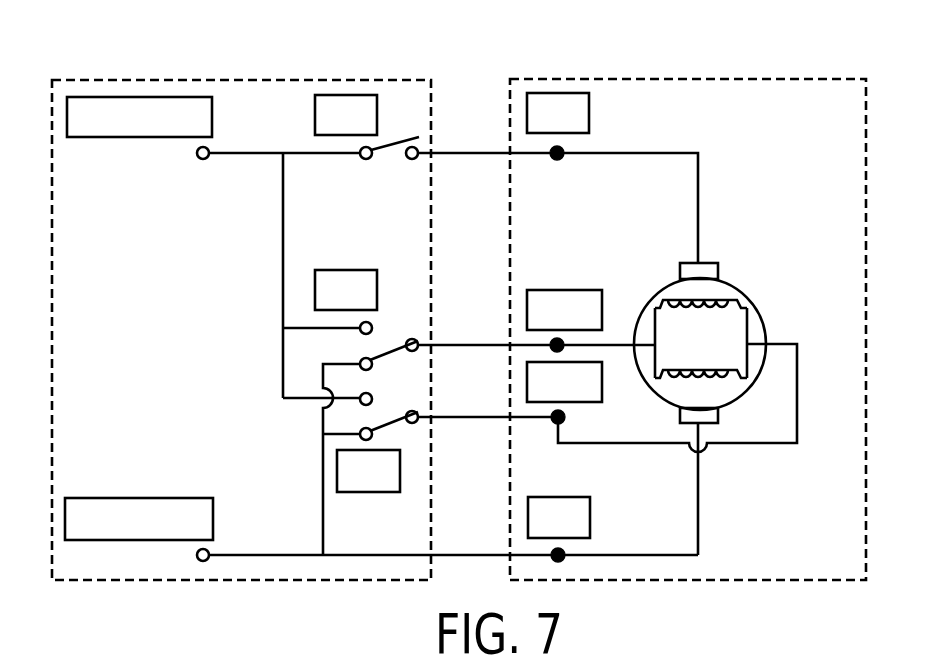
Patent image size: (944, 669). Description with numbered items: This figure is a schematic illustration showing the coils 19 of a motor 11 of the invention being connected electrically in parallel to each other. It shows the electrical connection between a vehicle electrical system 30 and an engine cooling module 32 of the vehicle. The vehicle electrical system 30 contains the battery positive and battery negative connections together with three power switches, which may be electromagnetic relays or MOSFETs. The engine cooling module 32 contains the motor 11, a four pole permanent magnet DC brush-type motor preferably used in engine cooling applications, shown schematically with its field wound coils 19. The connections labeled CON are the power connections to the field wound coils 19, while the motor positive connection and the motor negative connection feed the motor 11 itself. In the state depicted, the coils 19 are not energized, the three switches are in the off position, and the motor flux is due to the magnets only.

The vehicle electrical system 30 is at (240, 79).
The engine cooling module 32 is at (686, 78).
The motor 11 is at (758, 302).
The coils 19 is at (730, 386).